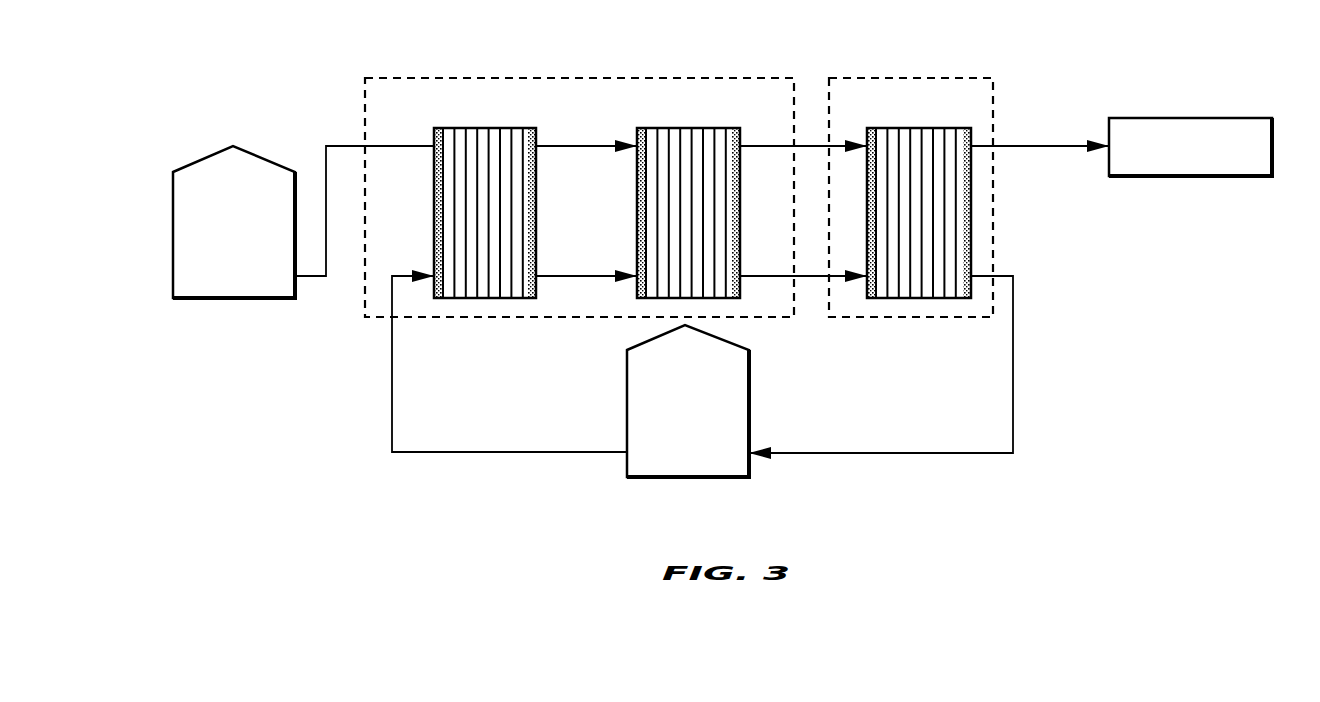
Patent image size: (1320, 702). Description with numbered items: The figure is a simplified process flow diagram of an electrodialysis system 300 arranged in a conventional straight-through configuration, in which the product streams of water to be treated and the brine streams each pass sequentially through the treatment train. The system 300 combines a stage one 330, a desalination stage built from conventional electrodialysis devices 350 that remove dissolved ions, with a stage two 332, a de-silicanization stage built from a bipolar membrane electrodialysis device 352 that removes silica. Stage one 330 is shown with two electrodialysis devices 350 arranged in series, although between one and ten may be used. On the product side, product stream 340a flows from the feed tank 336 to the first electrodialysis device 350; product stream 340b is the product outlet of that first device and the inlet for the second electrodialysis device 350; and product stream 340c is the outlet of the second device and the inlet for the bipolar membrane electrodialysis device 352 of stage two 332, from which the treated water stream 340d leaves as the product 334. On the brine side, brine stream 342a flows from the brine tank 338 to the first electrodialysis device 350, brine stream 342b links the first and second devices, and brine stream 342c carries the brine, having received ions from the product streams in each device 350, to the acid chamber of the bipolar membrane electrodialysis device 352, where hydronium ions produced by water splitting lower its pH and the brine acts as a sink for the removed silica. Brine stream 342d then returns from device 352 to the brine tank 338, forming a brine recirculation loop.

The electrodialysis system 300 is at (246, 70).
The stage one 330 is at (431, 77).
The stage two 332 is at (894, 77).
The product 334 is at (1189, 117).
The feed tank 336 is at (212, 160).
The brine tank 338 is at (627, 465).
The product stream 340a is at (349, 145).
The product stream 340b is at (590, 145).
The product stream 340c is at (785, 145).
The product stream 340d is at (1076, 145).
The brine stream 342a is at (392, 412).
The brine stream 342b is at (590, 278).
The brine stream 342c is at (757, 278).
The brine stream 342d is at (1013, 412).
The electrodialysis device 350 is at (492, 127).
The bipolar membrane electrodialysis device 352 is at (928, 127).